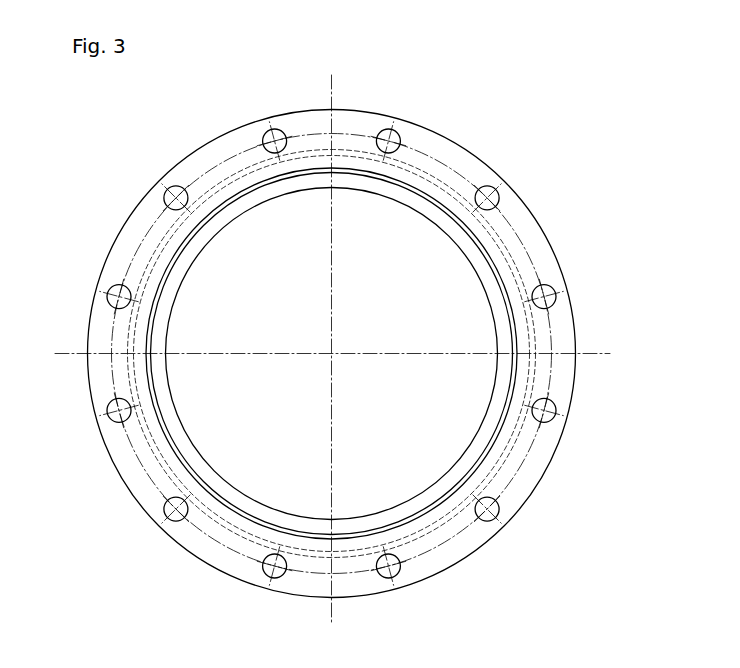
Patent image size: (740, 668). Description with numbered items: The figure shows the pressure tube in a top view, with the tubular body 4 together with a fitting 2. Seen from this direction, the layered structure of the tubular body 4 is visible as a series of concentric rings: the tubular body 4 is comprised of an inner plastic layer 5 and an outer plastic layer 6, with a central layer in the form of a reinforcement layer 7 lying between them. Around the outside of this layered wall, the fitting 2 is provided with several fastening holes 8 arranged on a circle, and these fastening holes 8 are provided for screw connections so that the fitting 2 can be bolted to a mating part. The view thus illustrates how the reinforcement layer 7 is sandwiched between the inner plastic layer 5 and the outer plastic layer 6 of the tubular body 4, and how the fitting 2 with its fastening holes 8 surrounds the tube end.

The fitting 2 is at (135, 220).
The tubular body 4 is at (529, 234).
The inner plastic layer 5 is at (425, 517).
The outer plastic layer 6 is at (545, 349).
The reinforcement layer 7 is at (511, 442).
The fastening holes 8 is at (380, 142).